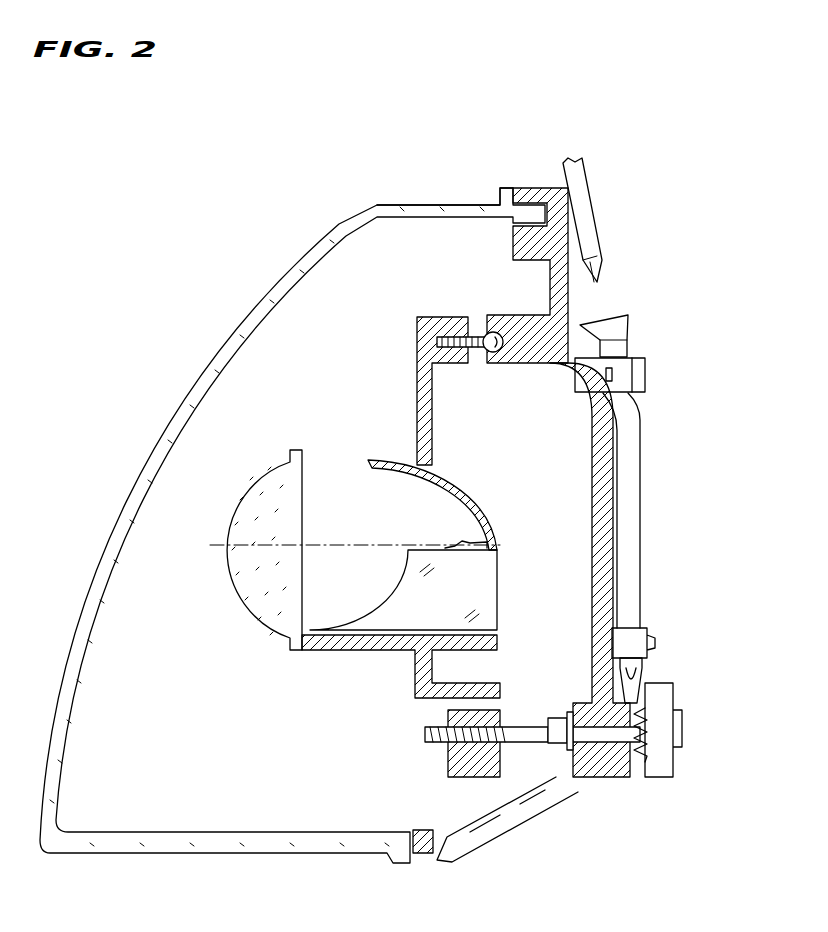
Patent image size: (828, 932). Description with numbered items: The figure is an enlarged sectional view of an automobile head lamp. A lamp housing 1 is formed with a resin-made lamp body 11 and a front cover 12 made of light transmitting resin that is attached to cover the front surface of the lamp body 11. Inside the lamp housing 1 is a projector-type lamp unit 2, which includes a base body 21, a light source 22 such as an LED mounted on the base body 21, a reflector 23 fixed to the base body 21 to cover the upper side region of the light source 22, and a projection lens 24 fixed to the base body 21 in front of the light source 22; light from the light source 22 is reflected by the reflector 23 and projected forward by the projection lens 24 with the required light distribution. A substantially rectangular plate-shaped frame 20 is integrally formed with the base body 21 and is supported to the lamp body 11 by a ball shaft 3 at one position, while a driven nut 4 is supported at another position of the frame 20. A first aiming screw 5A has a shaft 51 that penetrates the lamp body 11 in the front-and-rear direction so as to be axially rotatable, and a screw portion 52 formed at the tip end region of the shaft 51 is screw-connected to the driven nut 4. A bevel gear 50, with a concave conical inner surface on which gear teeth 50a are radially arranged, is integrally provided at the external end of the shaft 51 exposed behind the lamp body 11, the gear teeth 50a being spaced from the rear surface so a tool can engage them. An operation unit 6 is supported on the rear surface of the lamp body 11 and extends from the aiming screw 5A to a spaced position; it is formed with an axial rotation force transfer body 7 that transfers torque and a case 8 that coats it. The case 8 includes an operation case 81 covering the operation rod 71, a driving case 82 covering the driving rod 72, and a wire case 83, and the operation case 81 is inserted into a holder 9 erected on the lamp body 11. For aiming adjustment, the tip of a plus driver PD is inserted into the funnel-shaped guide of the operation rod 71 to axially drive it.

The lamp housing 1 is at (323, 230).
The front cover 12 is at (223, 342).
The lamp unit 2 is at (351, 514).
The projection lens 24 is at (243, 582).
The frame 20 is at (383, 643).
The base body 21 is at (482, 600).
The light source 22 is at (492, 535).
The reflector 23 is at (465, 497).
The ball shaft 3 is at (492, 330).
The plus driver PD is at (590, 217).
The operation unit 6 is at (641, 500).
The operation rod 71 is at (615, 327).
The holder 9 is at (620, 368).
The operation case 81 is at (645, 378).
The wire case 83 is at (640, 560).
The axial rotation force transfer body 7 is at (650, 510).
The case 8 is at (650, 510).
The driving case 82 is at (630, 638).
The driving rod 72 is at (643, 667).
The driven nut 4 is at (450, 753).
The first aiming screw 5A is at (532, 766).
The shaft 51 is at (555, 720).
The screw portion 52 is at (505, 725).
The bevel gear 50 is at (645, 754).
The gear teeth 50a is at (637, 760).
The lamp body 11 is at (460, 843).